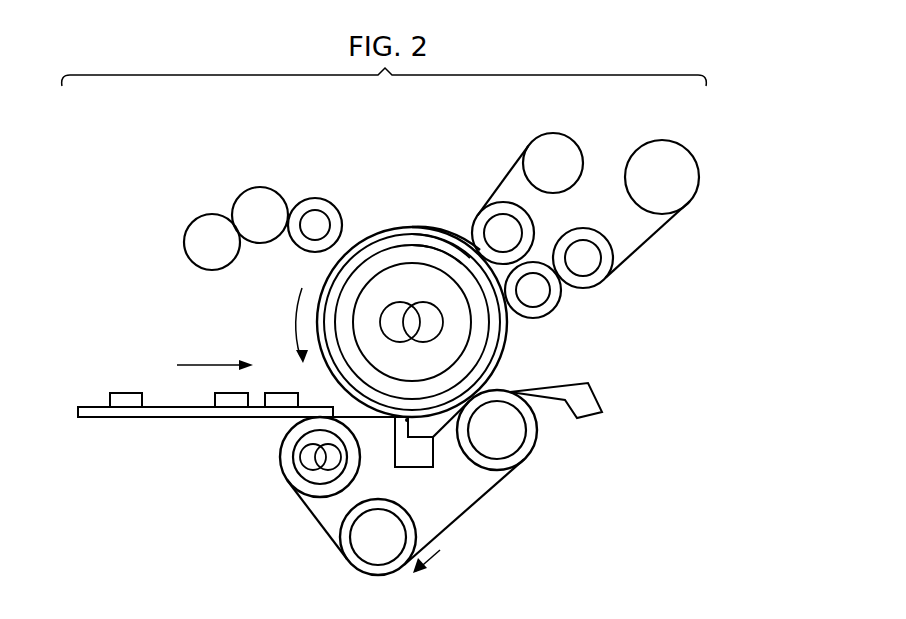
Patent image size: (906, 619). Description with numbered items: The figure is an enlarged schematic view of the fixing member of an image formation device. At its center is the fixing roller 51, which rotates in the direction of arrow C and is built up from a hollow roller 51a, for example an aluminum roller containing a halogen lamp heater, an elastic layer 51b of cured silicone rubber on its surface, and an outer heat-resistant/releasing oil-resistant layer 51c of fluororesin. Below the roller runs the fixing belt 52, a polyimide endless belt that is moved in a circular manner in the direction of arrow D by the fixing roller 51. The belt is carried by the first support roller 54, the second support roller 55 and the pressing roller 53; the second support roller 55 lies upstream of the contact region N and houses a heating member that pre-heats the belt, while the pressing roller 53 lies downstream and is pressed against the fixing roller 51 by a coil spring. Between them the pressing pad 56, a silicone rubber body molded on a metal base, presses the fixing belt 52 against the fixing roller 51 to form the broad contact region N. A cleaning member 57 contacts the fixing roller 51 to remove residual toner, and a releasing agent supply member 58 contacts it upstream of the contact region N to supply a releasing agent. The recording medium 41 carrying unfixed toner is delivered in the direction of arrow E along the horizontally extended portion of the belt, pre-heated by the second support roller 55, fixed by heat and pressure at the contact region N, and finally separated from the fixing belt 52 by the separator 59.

The recording medium 41 is at (122, 418).
The fixing roller 51 is at (506, 343).
The hollow roller 51a is at (441, 260).
The elastic layer 51b is at (413, 243).
The heat-resistant/releasing oil-resistant layer 51c is at (386, 229).
The fixing belt 52 is at (492, 485).
The pressing roller 53 is at (535, 442).
The first support roller 54 is at (342, 552).
The second support roller 55 is at (283, 458).
The pressing pad 56 is at (427, 452).
The cleaning member 57 is at (583, 200).
The releasing agent supply member 58 is at (329, 153).
The separator 59 is at (602, 397).
The rotation direction of fixing roller C is at (292, 325).
The circular movement direction of fixing belt D is at (429, 571).
The delivery direction of recording medium E is at (215, 354).
The contact region N is at (407, 424).